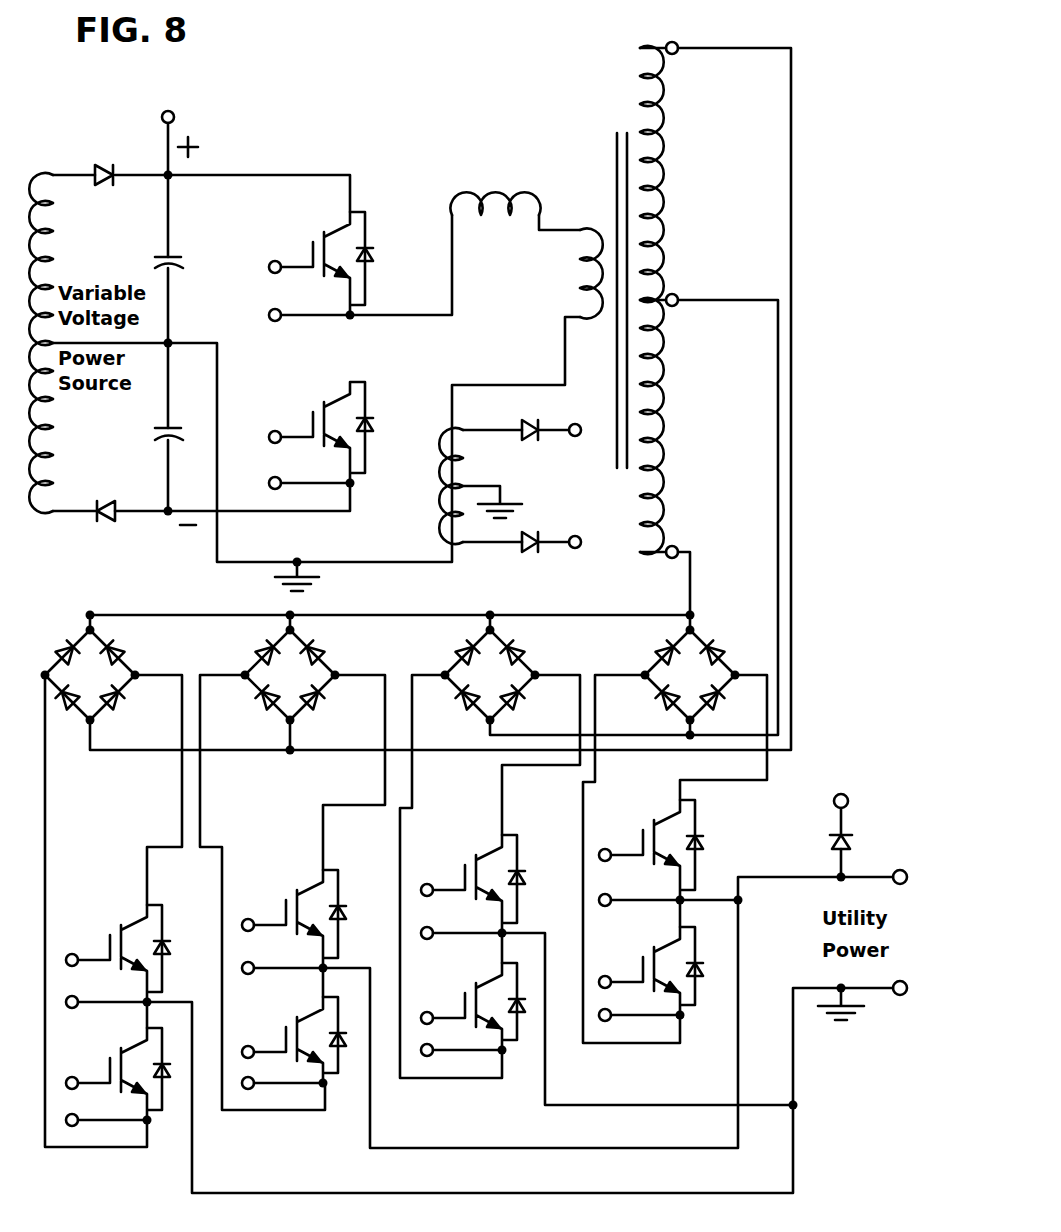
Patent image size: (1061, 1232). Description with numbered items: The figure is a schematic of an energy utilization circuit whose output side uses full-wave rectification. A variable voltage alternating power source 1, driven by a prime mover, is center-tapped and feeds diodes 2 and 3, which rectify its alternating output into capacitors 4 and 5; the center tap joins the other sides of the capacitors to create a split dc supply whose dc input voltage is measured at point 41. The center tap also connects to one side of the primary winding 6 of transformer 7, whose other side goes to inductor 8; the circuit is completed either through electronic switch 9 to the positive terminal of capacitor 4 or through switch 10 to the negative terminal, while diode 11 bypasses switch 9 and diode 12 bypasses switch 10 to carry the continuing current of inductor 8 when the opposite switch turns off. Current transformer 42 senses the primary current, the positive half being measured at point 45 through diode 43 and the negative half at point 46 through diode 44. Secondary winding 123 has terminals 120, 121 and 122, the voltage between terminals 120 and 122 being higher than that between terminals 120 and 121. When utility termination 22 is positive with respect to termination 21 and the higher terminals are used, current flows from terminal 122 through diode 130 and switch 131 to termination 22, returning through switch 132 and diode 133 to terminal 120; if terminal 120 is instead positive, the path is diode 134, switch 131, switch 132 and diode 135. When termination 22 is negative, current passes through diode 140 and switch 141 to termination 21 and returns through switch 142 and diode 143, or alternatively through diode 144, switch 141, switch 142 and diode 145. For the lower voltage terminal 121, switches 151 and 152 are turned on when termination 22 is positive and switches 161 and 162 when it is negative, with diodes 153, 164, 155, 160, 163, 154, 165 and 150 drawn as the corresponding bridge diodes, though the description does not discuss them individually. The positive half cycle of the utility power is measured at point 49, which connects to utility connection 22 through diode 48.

The variable voltage alternating power source 1 is at (36, 173).
The diode 2 is at (103, 163).
The diode 3 is at (110, 522).
The capacitor 4 is at (182, 258).
The capacitor 5 is at (157, 432).
The point 41 is at (176, 118).
The electronic switch 9 is at (310, 252).
The switch 10 is at (310, 427).
The diode 11 is at (378, 258).
The diode 12 is at (378, 412).
The inductor 8 is at (493, 190).
The primary winding 6 is at (590, 230).
The transformer 7 is at (613, 150).
The secondary winding 123 is at (640, 60).
The terminal 122 is at (678, 42).
The terminal 121 is at (678, 295).
The terminal 120 is at (678, 548).
The current transformer 42 is at (440, 510).
The diode 43 is at (530, 440).
The diode 44 is at (530, 552).
The point 45 is at (575, 437).
The point 46 is at (575, 549).
The diode 133 is at (70, 652).
The diode 144 is at (118, 650).
The diode 135 is at (68, 705).
The diode 140 is at (120, 698).
The diode 143 is at (262, 652).
The diode 134 is at (318, 652).
The diode 145 is at (265, 698).
The diode 130 is at (318, 700).
The bridge diode 153 is at (465, 652).
The bridge diode 164 is at (520, 652).
The bridge diode 155 is at (465, 698).
The bridge diode 160 is at (518, 700).
The bridge diode 163 is at (662, 652).
The bridge diode 154 is at (714, 650).
The bridge diode 165 is at (665, 698).
The bridge diode 150 is at (716, 700).
The switch 141 is at (110, 950).
The switch 132 is at (110, 1073).
The switch 131 is at (286, 915).
The switch 142 is at (286, 1042).
The switch 161 is at (465, 880).
The switch 152 is at (465, 1008).
The switch 151 is at (643, 845).
The switch 162 is at (643, 972).
The point 49 is at (845, 795).
The diode 48 is at (855, 838).
The utility power termination 22 is at (900, 870).
The utility power termination 21 is at (900, 995).